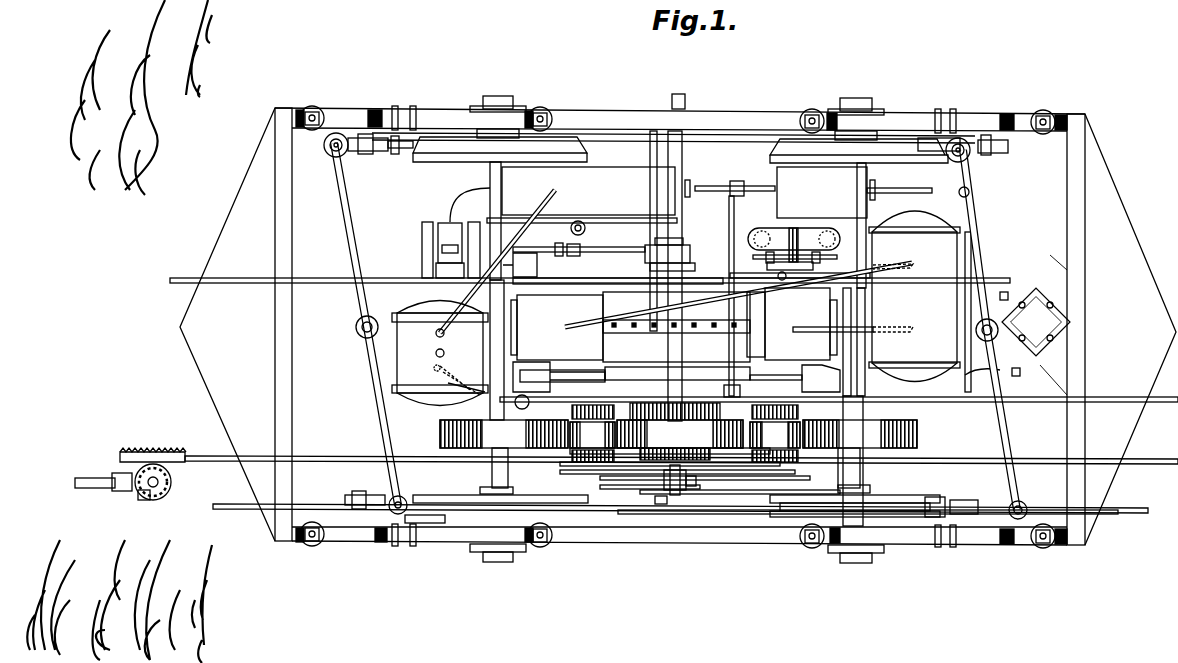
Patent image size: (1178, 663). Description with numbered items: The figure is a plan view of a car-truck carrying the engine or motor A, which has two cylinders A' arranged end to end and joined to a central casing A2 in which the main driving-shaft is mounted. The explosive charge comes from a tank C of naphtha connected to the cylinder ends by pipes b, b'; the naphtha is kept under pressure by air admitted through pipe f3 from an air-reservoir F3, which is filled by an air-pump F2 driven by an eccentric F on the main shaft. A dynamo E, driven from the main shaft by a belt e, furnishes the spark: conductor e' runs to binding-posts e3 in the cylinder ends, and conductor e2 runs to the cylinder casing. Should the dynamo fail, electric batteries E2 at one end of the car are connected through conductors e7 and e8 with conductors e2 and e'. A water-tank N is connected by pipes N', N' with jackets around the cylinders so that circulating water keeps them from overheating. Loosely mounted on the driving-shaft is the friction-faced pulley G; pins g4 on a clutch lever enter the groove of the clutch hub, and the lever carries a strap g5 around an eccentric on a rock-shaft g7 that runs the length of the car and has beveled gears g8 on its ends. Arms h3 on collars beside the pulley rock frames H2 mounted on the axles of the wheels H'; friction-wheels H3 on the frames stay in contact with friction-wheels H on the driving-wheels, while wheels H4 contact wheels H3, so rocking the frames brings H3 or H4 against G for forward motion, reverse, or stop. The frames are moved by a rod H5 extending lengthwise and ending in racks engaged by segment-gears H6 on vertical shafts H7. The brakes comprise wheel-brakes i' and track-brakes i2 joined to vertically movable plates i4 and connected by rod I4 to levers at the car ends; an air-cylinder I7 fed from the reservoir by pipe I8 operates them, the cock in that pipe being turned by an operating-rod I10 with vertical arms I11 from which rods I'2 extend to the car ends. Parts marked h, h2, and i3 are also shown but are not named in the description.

The engine A is at (678, 328).
The air-reservoir F3 is at (588, 191).
The pipe f3 is at (545, 196).
The air-pump F2 is at (422, 240).
The eccentric F is at (695, 255).
The pipe I8 is at (745, 186).
The air-cylinder I7 is at (854, 192).
The operating-rod I10 is at (735, 208).
The dynamo E is at (794, 249).
The belt e is at (800, 263).
The conductor e' is at (811, 268).
The vertical arms I11 is at (700, 303).
The pipes N' is at (893, 285).
The water-tank N is at (914, 296).
The conductor e7 is at (938, 312).
The conductor e8 is at (978, 375).
The cylinders A' is at (674, 324).
The central casing A2 is at (635, 337).
The conductor e2 is at (777, 311).
The binding-posts e3 is at (819, 311).
The tank C is at (440, 353).
The pipe b is at (457, 374).
The pipe b' is at (455, 399).
The wheel-brake i' is at (675, 303).
The track-brakes i2 is at (365, 151).
The plates i4 is at (355, 153).
The coupling i3 is at (360, 492).
The electric batteries E2 is at (1045, 322).
The rods I'2 is at (674, 341).
The rod H5 is at (681, 450).
The rod I4 is at (945, 500).
The friction-wheels H4 is at (155, 452).
The segment-gear H6 is at (172, 478).
The friction-wheels H3 is at (103, 474).
The vertical shaft H7 is at (142, 500).
The friction-wheels H is at (673, 434).
The pulley G is at (670, 434).
The wheels H' is at (592, 433).
The arms h3 is at (795, 462).
The frames H2 is at (520, 455).
The shaft h is at (728, 470).
The rock-shaft g7 is at (615, 480).
The clutch h2 is at (664, 485).
The pins g4 is at (692, 486).
The beveled gears g8 is at (650, 494).
The strap g5 is at (668, 489).